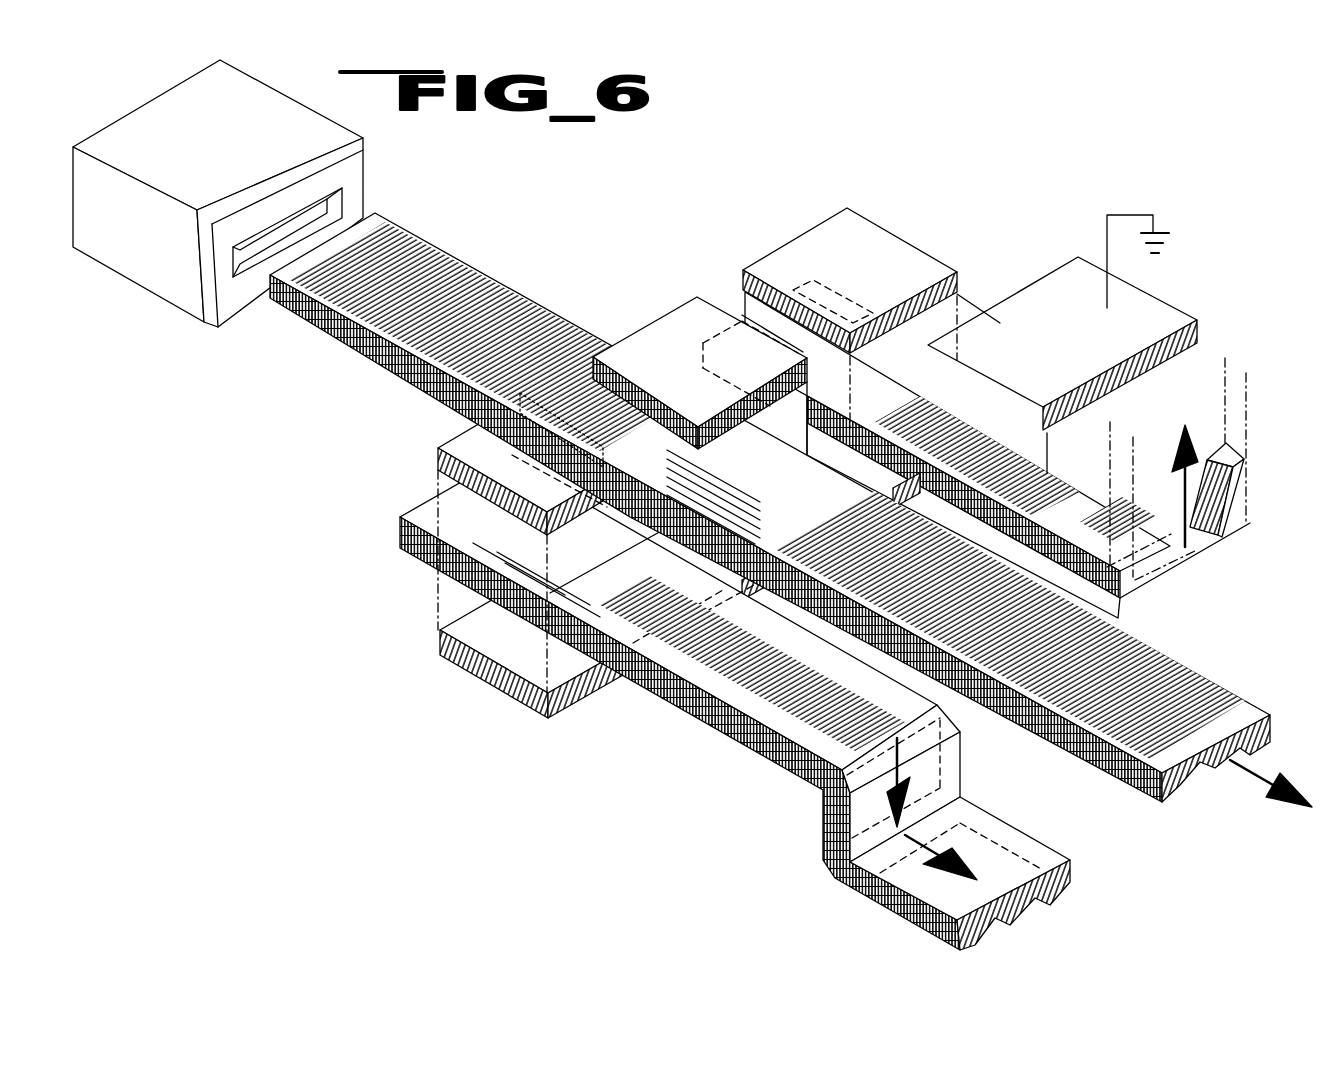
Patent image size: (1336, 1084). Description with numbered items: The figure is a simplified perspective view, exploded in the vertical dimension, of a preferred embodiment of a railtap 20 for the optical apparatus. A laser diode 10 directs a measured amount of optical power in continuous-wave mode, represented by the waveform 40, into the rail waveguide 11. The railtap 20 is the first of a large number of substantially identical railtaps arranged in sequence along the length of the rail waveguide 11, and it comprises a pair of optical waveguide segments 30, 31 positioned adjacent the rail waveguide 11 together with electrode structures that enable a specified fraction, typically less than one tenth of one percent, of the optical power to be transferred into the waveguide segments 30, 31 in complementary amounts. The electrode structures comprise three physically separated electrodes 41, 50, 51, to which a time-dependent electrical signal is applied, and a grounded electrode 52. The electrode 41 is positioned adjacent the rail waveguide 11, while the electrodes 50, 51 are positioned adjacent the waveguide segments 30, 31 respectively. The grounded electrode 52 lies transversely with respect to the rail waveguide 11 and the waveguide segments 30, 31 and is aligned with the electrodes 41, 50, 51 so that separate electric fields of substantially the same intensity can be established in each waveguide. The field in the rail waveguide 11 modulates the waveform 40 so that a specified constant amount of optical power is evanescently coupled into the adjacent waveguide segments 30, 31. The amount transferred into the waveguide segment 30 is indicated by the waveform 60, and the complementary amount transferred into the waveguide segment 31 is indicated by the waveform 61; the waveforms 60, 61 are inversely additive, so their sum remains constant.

The laser diode 10 is at (120, 120).
The rail waveguide 11 is at (791, 501).
The railtap 20 is at (663, 334).
The waveguide segment 30 is at (706, 703).
The waveguide segment 31 is at (747, 317).
The waveform 40 is at (413, 247).
The electrode 41 is at (676, 308).
The electrode 50 is at (446, 445).
The electrode 51 is at (882, 226).
The grounded electrode 52 is at (1168, 303).
The waveform 60 is at (637, 595).
The waveform 61 is at (978, 398).